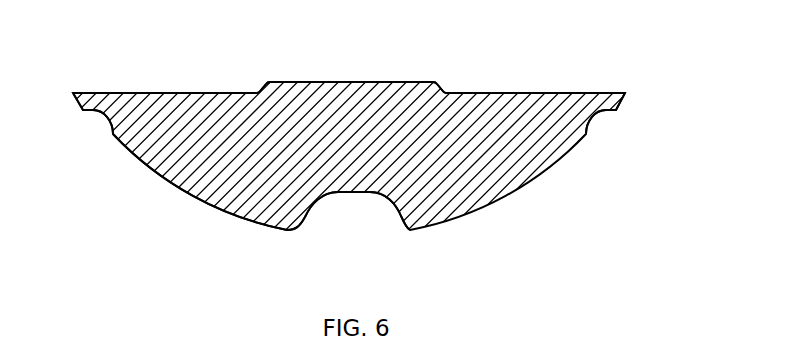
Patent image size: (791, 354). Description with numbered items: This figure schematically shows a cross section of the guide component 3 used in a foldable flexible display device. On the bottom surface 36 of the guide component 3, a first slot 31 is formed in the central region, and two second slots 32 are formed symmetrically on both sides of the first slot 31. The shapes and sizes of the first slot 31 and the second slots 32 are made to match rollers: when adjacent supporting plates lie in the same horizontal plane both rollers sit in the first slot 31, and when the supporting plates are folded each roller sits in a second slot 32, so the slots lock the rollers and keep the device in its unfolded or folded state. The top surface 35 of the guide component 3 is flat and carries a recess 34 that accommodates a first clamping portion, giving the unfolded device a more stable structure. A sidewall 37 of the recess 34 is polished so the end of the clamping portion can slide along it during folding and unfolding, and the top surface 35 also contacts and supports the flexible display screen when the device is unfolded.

The guide component 3 is at (485, 195).
The first slot 31 is at (353, 218).
The second slot 32 is at (98, 122).
The recess 34 is at (198, 93).
The top surface 35 is at (355, 82).
The bottom surface 36 is at (183, 187).
The sidewall 37 is at (262, 90).